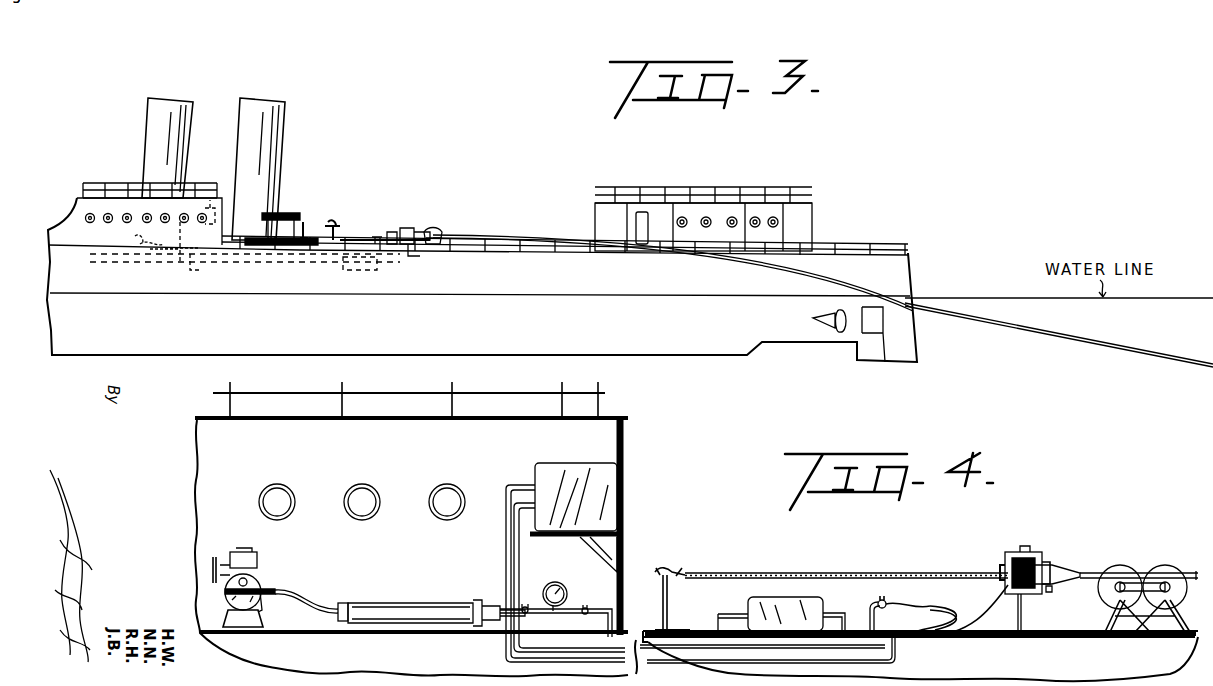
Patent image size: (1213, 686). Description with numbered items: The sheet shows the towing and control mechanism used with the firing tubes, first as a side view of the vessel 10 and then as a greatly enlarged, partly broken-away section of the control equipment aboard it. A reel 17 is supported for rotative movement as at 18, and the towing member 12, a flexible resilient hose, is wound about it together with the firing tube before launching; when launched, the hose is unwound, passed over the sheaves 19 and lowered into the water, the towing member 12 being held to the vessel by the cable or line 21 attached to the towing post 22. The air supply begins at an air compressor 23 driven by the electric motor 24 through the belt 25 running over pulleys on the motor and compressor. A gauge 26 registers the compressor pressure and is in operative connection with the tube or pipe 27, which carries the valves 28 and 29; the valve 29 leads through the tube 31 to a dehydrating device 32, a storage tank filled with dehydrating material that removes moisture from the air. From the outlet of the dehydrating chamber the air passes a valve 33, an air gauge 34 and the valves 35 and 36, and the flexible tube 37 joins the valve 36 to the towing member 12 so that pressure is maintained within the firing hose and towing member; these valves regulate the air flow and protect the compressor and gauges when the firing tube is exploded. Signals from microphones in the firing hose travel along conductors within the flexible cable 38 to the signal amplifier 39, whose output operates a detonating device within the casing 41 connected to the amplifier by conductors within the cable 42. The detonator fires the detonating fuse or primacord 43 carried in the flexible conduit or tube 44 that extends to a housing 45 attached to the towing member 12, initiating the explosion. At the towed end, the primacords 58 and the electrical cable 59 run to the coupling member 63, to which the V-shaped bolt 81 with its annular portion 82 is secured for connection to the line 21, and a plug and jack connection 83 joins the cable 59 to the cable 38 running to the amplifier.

In FIG. 3, the vessel hull / deckhouse 10 is at (583, 204).
In FIG. 4, the vessel hull / deckhouse 10 is at (635, 414).
In FIG. 3, the towing member 12 is at (1118, 334).
In FIG. 4, the towing member 12 is at (1194, 572).
In FIG. 3, the reel 17 is at (304, 223).
In FIG. 3, the rotative support 18 is at (282, 213).
In FIG. 3, the sheaves 19 is at (436, 232).
In FIG. 4, the sheaves 19 is at (1100, 598).
In FIG. 3, the cable or line 21 is at (366, 238).
In FIG. 4, the cable or line 21 is at (818, 572).
In FIG. 3, the towing post 22 is at (334, 224).
In FIG. 4, the towing post 22 is at (662, 602).
In FIG. 3, the air compressor 23 is at (137, 246).
In FIG. 4, the air compressor 23 is at (255, 585).
In FIG. 4, the electric motor 24 is at (258, 562).
In FIG. 3, the belt 25 is at (134, 236).
In FIG. 4, the belt 25 is at (215, 570).
In FIG. 4, the gauge 26 is at (276, 590).
In FIG. 4, the tube or pipe 27 is at (263, 605).
In FIG. 4, the valve 28 is at (225, 599).
In FIG. 4, the valve 29 is at (312, 604).
In FIG. 3, the tube 31 is at (150, 250).
In FIG. 4, the tube 31 is at (346, 604).
In FIG. 3, the dehydrating device 32 is at (180, 250).
In FIG. 4, the dehydrating device 32 is at (404, 602).
In FIG. 4, the valve 33 is at (521, 606).
In FIG. 4, the air gauge 34 is at (566, 604).
In FIG. 4, the valve 35 is at (590, 610).
In FIG. 3, the valve 36 is at (380, 236).
In FIG. 4, the valve 36 is at (888, 602).
In FIG. 3, the flexible tube 37 is at (392, 232).
In FIG. 4, the flexible tube 37 is at (870, 614).
In FIG. 3, the flexible cable 38 is at (382, 262).
In FIG. 4, the flexible cable 38 is at (506, 560).
In FIG. 3, the signal amplifier 39 is at (215, 200).
In FIG. 4, the signal amplifier 39 is at (580, 470).
In FIG. 3, the casing 41 is at (352, 260).
In FIG. 4, the casing 41 is at (756, 596).
In FIG. 3, the cable 42 is at (192, 266).
In FIG. 4, the cable 42 is at (520, 560).
In FIG. 4, the detonating fuse or primacord 43 is at (1024, 604).
In FIG. 3, the flexible conduit or tube 44 is at (414, 256).
In FIG. 4, the flexible conduit or tube 44 is at (1030, 624).
In FIG. 3, the housing 45 is at (410, 229).
In FIG. 4, the housing 45 is at (1008, 552).
In FIG. 4, the primacords 58 is at (1005, 580).
In FIG. 4, the electrical cable 59 is at (1048, 560).
In FIG. 4, the coupling member 63 is at (1068, 566).
In FIG. 4, the V-shaped bolt 81 is at (1002, 565).
In FIG. 4, the annular portion 82 is at (1054, 590).
In FIG. 4, the plug and jack connection 83 is at (1026, 548).